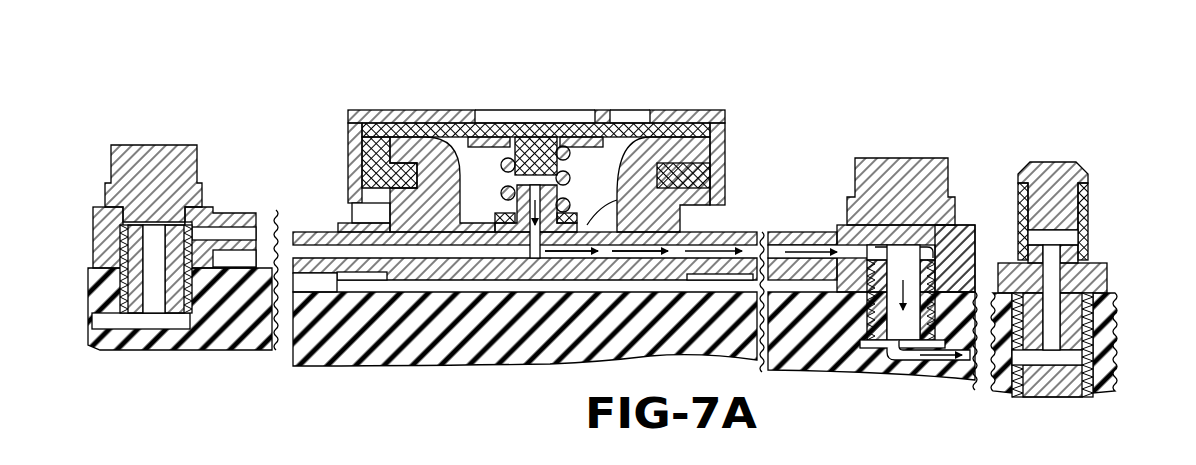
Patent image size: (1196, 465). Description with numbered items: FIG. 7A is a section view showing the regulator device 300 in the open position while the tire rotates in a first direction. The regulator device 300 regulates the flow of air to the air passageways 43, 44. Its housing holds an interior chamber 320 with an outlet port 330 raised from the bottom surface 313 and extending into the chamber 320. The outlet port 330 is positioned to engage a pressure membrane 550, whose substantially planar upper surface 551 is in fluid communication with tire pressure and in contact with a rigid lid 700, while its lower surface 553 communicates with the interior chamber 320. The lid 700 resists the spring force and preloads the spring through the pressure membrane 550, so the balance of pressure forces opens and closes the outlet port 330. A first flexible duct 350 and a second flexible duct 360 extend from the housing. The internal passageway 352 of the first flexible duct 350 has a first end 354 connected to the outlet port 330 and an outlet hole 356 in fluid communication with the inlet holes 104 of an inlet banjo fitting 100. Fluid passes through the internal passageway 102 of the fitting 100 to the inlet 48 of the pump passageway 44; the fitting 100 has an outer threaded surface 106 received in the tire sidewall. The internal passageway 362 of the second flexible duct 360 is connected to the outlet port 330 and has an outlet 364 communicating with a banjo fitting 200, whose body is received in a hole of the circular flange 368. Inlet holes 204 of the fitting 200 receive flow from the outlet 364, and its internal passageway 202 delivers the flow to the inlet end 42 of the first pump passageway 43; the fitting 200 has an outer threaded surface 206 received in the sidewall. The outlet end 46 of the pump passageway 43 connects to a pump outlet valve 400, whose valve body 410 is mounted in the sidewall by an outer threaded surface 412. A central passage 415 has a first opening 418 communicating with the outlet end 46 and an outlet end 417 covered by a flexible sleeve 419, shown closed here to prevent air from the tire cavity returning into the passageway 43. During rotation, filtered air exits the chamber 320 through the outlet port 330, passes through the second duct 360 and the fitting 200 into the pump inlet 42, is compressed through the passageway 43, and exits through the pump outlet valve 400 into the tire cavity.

The inlet banjo fitting 100 is at (125, 130).
The internal passageway 102 is at (158, 285).
The inlet holes 104 is at (135, 232).
The outer threaded surface 106 is at (125, 287).
The pump passageway 44 is at (105, 333).
The inlet 48 is at (153, 318).
The outlet hole 356 is at (188, 230).
The first flexible duct 350 is at (250, 212).
The internal passageway 352 is at (308, 252).
The second flexible duct 360 is at (105, 250).
The rigid lid 700 is at (395, 110).
The upper surface 551 is at (380, 130).
The lower surface 553 is at (455, 137).
The regulator device 300 is at (640, 95).
The pressure membrane 550 is at (690, 118).
The interior chamber 320 is at (590, 183).
The bottom surface 313 is at (587, 225).
The outlet port 330 is at (530, 197).
The first end 354 is at (521, 252).
The banjo fitting 200 is at (903, 140).
The internal passageway 202 is at (910, 268).
The inlet holes 204 is at (883, 250).
The outlet 364 is at (870, 253).
The circular flange 368 is at (963, 253).
The internal passageway 362 is at (770, 250).
The outer threaded surface 206 is at (868, 338).
The inlet end 42 is at (895, 360).
The first pump passageway 43 is at (965, 362).
The pump outlet valve 400 is at (1072, 150).
The outlet end 417 is at (1052, 232).
The flexible sleeve 419 is at (1055, 245).
The central passage 415 is at (1053, 268).
The valve body 410 is at (1085, 282).
The outer threaded surface 412 is at (1090, 335).
The outlet end 46 is at (1014, 360).
The first opening 418 is at (1052, 347).